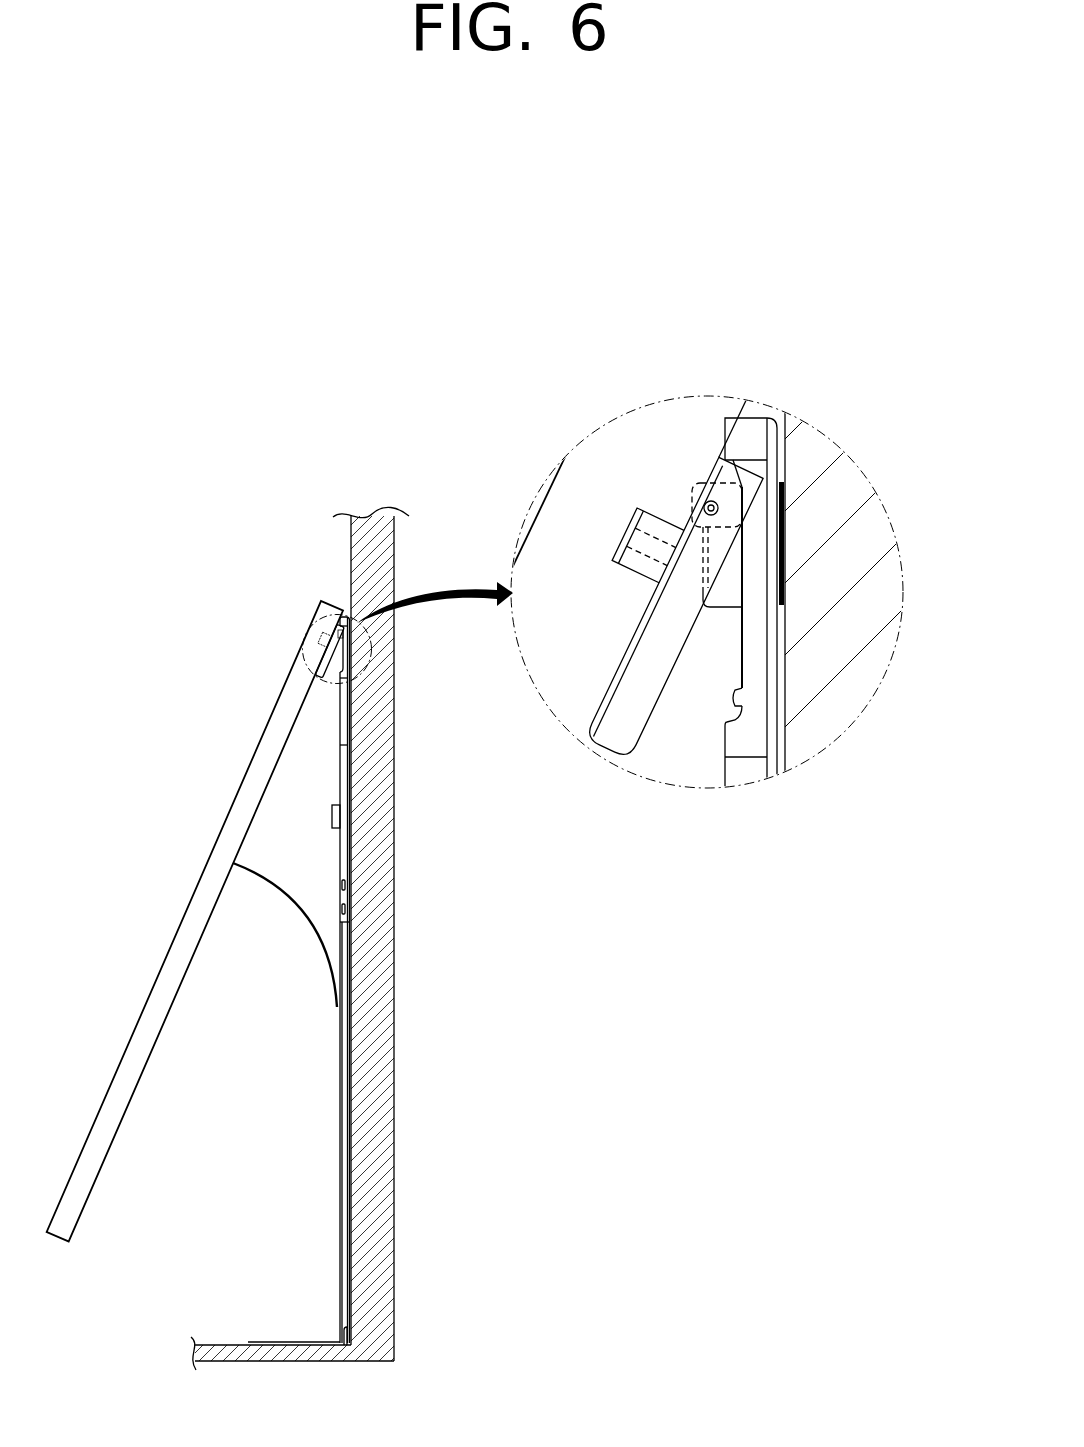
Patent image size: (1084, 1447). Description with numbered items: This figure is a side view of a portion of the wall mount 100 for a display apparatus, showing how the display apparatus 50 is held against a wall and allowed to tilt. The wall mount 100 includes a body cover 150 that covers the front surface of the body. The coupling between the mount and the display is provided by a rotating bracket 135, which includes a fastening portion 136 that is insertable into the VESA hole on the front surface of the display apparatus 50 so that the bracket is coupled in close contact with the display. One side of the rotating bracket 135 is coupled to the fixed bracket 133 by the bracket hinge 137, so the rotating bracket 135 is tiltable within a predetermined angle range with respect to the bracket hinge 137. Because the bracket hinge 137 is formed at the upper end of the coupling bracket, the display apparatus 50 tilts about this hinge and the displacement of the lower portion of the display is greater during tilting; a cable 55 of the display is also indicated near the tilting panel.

The display apparatus 50 is at (259, 745).
The cable 55 is at (275, 889).
The wall mount 100 is at (320, 1086).
The fixed bracket 133 is at (752, 640).
The rotating bracket 135 is at (613, 735).
The fastening portion 136 is at (661, 505).
The bracket hinge 137 is at (716, 500).
The body cover 150 is at (337, 1163).